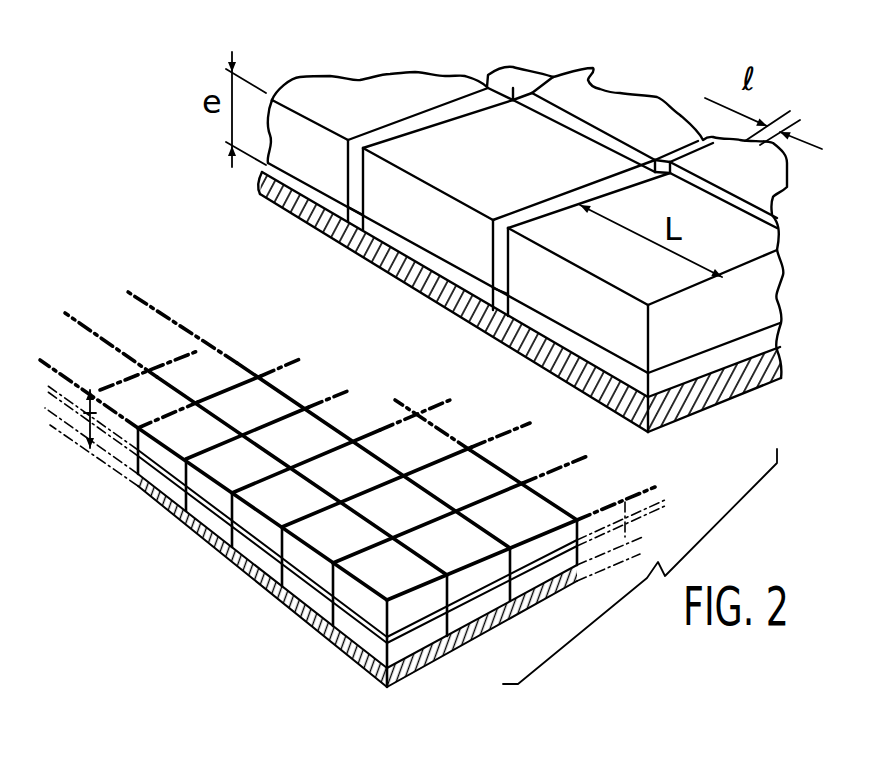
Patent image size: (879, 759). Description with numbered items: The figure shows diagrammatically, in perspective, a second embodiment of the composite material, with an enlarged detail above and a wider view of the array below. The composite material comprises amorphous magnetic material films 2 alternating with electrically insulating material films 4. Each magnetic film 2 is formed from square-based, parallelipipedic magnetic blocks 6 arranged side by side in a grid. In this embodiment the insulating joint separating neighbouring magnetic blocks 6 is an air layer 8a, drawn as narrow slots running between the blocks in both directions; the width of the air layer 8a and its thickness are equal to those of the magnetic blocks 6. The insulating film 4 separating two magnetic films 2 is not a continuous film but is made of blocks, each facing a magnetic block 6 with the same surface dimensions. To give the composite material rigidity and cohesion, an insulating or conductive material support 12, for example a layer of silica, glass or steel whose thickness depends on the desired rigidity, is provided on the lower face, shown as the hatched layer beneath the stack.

The amorphous magnetic material film 2 is at (556, 303).
The electrically insulating material film 4 is at (757, 340).
The magnetic block 6 is at (377, 183).
The air layer 8a is at (545, 106).
The support 12 is at (623, 401).